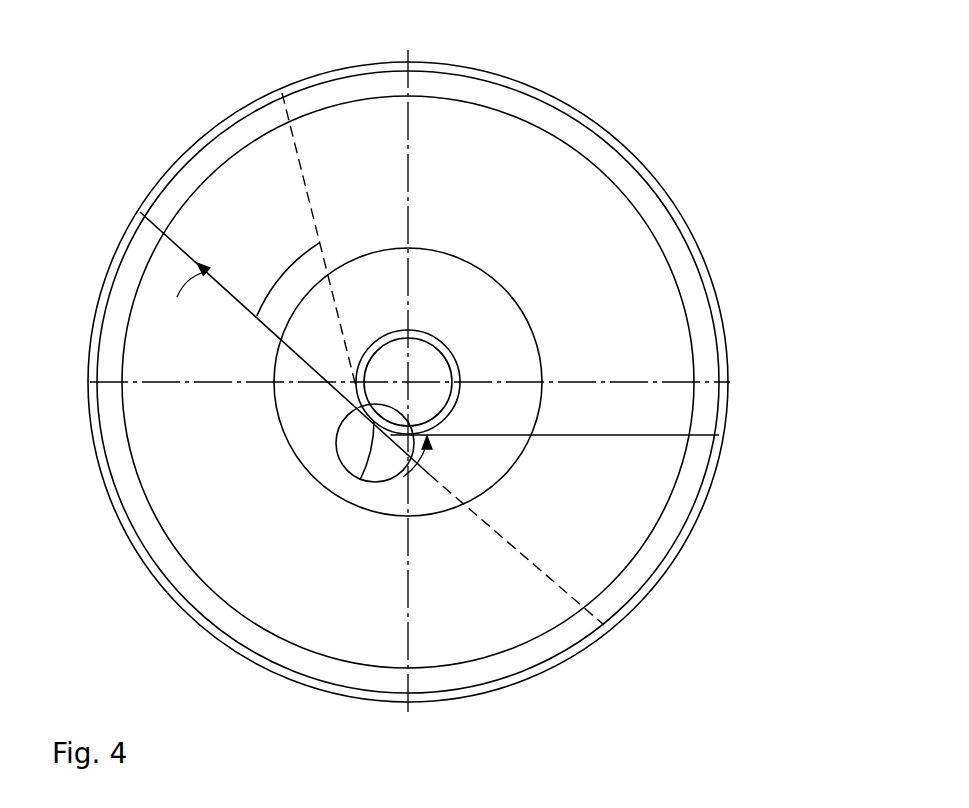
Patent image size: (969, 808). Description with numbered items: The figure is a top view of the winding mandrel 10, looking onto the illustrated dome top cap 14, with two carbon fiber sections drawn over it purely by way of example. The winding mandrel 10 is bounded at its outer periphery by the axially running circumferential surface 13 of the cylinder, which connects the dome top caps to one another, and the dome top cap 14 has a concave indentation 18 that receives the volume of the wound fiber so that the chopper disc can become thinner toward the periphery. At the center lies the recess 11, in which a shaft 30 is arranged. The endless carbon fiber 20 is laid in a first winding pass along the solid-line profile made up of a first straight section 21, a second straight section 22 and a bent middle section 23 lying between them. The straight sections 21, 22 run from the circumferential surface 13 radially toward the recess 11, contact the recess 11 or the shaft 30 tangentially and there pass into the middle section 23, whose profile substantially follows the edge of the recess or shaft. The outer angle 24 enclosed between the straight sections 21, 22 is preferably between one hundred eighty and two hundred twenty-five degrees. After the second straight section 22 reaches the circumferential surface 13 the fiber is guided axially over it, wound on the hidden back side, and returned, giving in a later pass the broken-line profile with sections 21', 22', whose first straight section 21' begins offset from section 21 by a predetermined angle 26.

The winding mandrel 10 is at (668, 103).
The recess 11 is at (456, 366).
The circumferential surface 13 is at (667, 195).
The first dome top cap 14 is at (487, 121).
The concave indentation 18 is at (457, 287).
The carbon fiber 20 is at (335, 176).
The first straight section 21 is at (285, 343).
The first straight section of another winding pass 21' is at (319, 240).
The second straight section 22 is at (555, 471).
The second straight section of another winding pass 22' is at (517, 550).
The bent middle section 23 is at (359, 477).
The outer angle 24 is at (337, 442).
The predetermined angle 26 is at (286, 270).
The shaft 30 is at (427, 398).